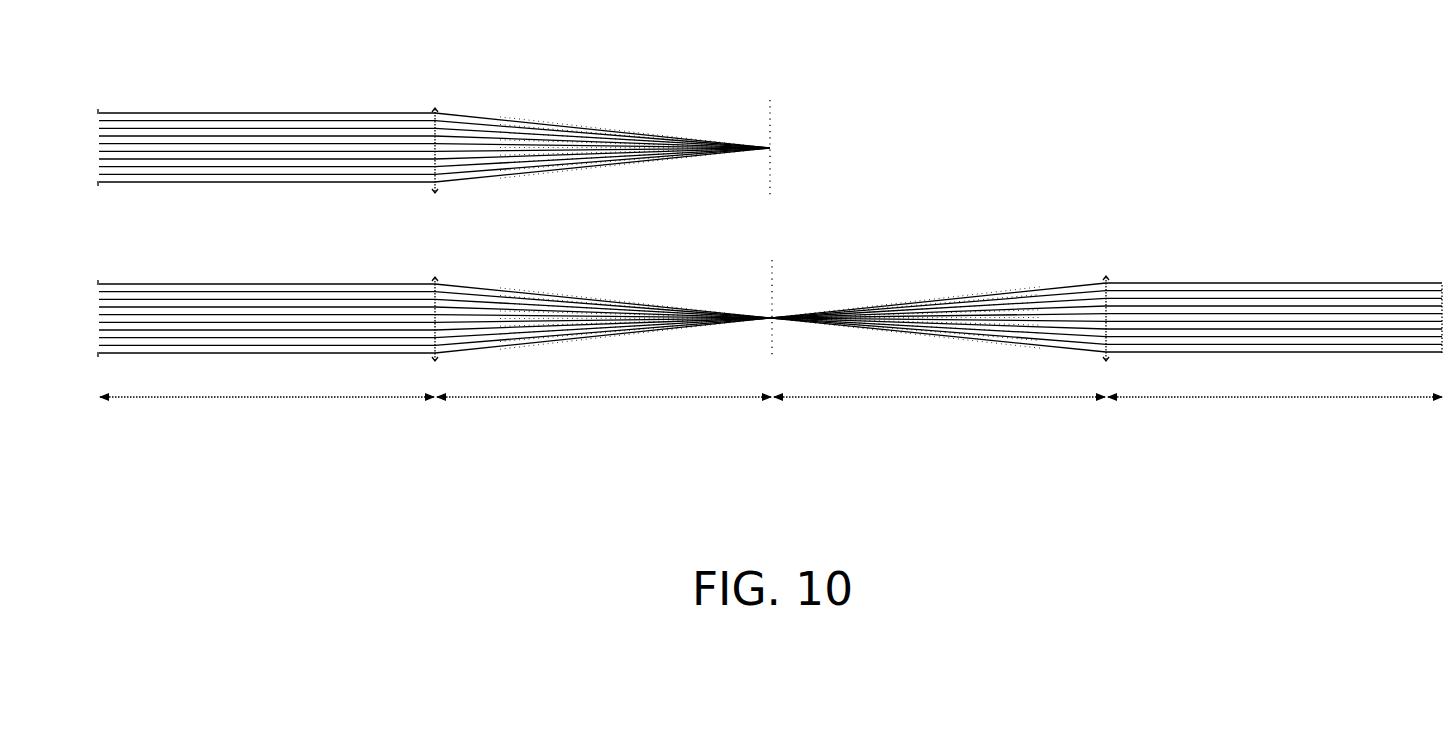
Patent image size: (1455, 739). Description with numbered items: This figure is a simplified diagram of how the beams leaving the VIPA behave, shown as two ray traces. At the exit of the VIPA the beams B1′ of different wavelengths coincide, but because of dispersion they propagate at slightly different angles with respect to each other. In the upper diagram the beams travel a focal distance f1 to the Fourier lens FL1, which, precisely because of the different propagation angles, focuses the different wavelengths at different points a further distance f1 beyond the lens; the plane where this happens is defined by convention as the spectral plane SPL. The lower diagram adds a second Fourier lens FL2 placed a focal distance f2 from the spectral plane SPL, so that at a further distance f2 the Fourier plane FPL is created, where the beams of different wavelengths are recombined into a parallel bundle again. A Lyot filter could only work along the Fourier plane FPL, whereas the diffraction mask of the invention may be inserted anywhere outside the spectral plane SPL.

The element VIPA is at (103, 206).
The beam B1′ is at (242, 112).
The Fourier lens FL1 is at (437, 214).
The spectral plane SPL is at (774, 212).
The second Fourier lens FL2 is at (1102, 293).
The Fourier plane FPL is at (1433, 289).
The focal distance f1 is at (435, 410).
The focal distance f2 is at (1108, 411).